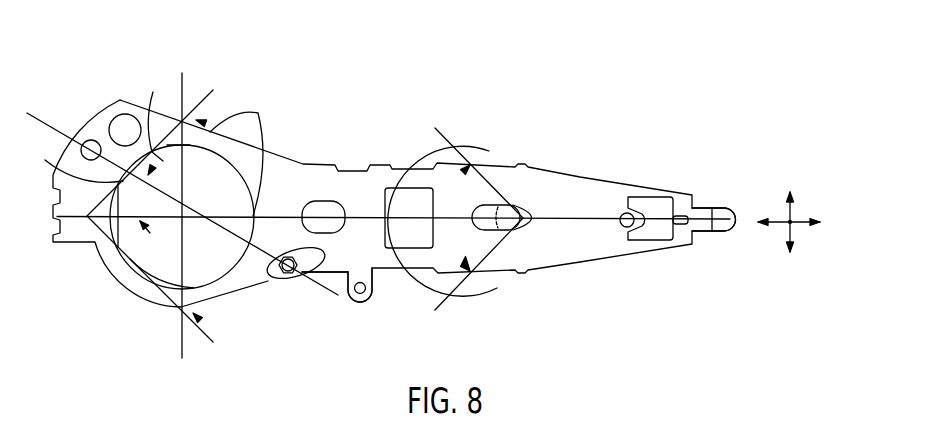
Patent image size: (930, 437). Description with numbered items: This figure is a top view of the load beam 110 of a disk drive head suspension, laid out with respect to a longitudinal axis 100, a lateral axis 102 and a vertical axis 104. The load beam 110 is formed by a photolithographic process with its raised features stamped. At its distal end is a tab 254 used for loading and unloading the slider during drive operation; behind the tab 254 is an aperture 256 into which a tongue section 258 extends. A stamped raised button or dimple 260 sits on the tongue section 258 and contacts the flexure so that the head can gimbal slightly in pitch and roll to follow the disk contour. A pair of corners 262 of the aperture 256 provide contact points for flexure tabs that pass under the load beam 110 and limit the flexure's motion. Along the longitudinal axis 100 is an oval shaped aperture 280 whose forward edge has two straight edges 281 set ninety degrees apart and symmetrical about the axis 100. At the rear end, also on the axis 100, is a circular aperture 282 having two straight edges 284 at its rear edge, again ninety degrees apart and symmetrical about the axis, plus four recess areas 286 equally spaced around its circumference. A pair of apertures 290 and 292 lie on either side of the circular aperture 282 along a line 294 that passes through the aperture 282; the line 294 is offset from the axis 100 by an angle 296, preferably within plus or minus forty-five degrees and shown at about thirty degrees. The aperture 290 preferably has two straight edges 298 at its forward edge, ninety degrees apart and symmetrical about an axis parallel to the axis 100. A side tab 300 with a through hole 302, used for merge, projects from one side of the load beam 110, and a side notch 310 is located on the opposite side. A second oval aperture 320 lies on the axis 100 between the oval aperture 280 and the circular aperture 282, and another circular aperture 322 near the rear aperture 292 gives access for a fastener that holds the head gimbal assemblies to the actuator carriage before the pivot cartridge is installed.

The longitudinal axis 100 is at (795, 215).
The lateral axis 102 is at (785, 214).
The vertical axis 104 is at (793, 225).
The load beam 110 is at (592, 84).
The tab 254 is at (712, 208).
The aperture 256 is at (660, 210).
The tongue section 258 is at (660, 240).
The dimple 260 is at (620, 222).
The corners 262 is at (627, 197).
The oval shaped aperture 280 is at (490, 203).
The straight edges 281 is at (524, 219).
The circular aperture 282 is at (140, 270).
The straight edges 284 is at (110, 297).
The recess areas 286 is at (258, 114).
The aperture 290 is at (268, 282).
The aperture 292 is at (90, 139).
The line 294 is at (302, 277).
The angle 296 is at (152, 115).
The straight edges 298 is at (318, 254).
The side tab 300 is at (352, 301).
The through hole 302 is at (366, 288).
The side notch 310 is at (358, 163).
The second oval aperture 320 is at (313, 200).
The circular aperture 322 is at (122, 101).